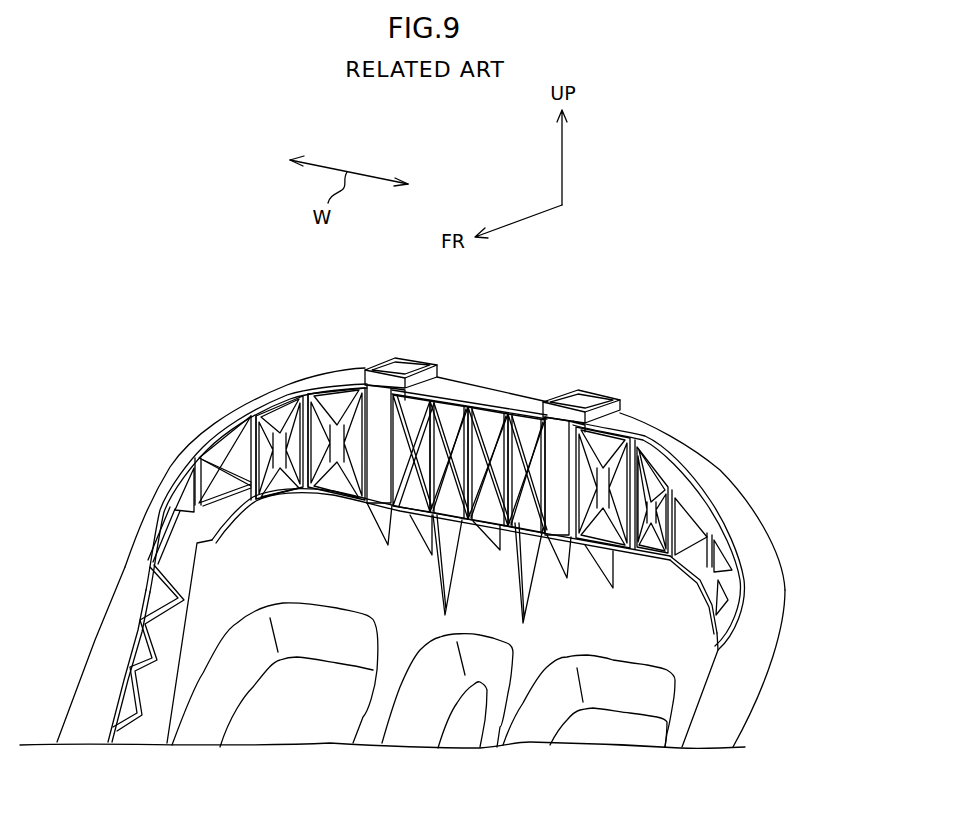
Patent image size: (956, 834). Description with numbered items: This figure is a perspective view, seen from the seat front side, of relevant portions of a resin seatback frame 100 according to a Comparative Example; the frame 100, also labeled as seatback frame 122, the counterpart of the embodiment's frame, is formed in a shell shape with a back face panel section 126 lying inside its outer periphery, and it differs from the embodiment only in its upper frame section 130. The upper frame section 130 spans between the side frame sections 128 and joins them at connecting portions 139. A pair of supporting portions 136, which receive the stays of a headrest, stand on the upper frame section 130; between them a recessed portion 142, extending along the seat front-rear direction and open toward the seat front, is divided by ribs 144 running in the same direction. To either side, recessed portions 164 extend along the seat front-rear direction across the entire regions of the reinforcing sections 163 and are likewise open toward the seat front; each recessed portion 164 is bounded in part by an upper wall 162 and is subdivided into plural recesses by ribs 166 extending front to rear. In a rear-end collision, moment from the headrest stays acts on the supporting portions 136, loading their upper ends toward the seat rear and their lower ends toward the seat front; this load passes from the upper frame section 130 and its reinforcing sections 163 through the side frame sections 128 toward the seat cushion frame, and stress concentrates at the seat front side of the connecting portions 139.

The seatback frame 100 is at (218, 314).
The seatback frame 122 is at (753, 479).
The back face panel section 126 is at (297, 730).
The side frame section 128 is at (100, 635).
The upper frame section 130 is at (494, 380).
The supporting portion 136 is at (413, 355).
The connecting portion 139 is at (137, 568).
The recessed portion 142 is at (500, 527).
The rib 144 is at (420, 530).
The upper wall 162 is at (350, 378).
The reinforcing section 163 is at (330, 370).
The recessed portion 164 is at (282, 383).
The rib 166 is at (218, 430).